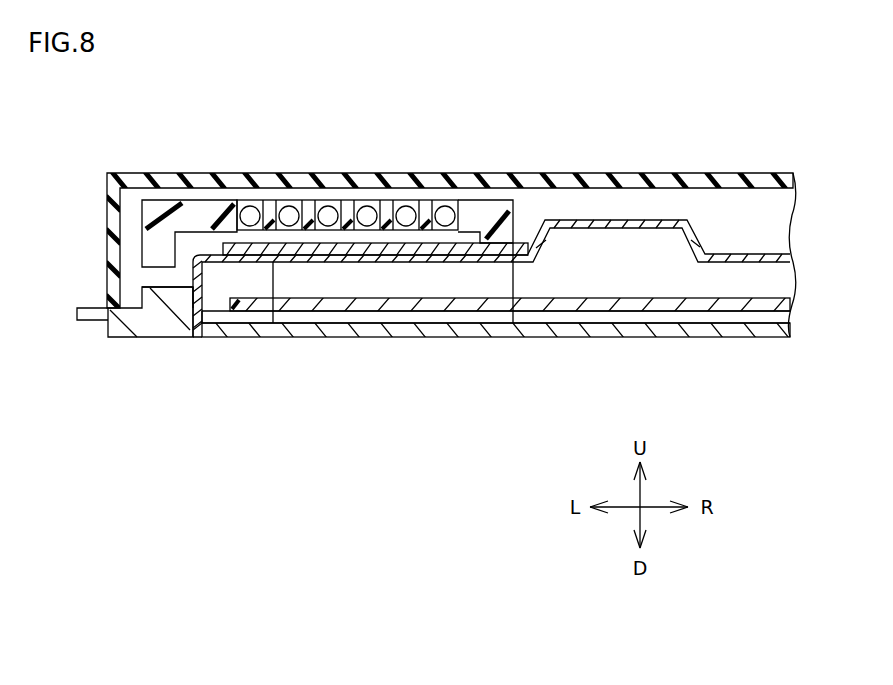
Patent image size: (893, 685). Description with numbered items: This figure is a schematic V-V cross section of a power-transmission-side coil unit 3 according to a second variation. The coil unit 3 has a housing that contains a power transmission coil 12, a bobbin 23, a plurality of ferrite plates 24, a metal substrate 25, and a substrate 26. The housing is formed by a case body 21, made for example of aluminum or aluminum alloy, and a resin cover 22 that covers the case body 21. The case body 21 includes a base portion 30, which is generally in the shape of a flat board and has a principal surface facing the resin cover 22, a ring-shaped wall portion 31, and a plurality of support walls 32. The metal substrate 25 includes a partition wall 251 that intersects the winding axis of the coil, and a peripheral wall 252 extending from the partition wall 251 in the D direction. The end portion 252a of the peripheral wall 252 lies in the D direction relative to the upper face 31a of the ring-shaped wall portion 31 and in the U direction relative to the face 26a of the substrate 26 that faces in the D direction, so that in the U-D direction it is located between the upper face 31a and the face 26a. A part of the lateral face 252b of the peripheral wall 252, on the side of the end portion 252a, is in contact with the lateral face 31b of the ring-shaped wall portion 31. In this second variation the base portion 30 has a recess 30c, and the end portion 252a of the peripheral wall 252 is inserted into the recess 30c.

The power-transmission-side coil unit 3 is at (768, 124).
The power transmission coil 12 is at (406, 213).
The case body 21 is at (86, 321).
The resin cover 22 is at (460, 183).
The bobbin 23 is at (187, 216).
The ferrite plates 24 is at (346, 240).
The metal substrate 25 is at (765, 258).
The partition wall 251 is at (320, 263).
The peripheral wall 252 is at (203, 292).
The end portion 252a is at (201, 336).
The lateral face 252b is at (194, 277).
The substrate 26 is at (429, 303).
The face 26a is at (392, 312).
The base portion 30 is at (550, 332).
The recess 30c is at (191, 317).
The ring-shaped wall portion 31 is at (158, 312).
The upper face 31a is at (170, 286).
The lateral face 31b is at (189, 303).
The support walls 32 is at (478, 318).